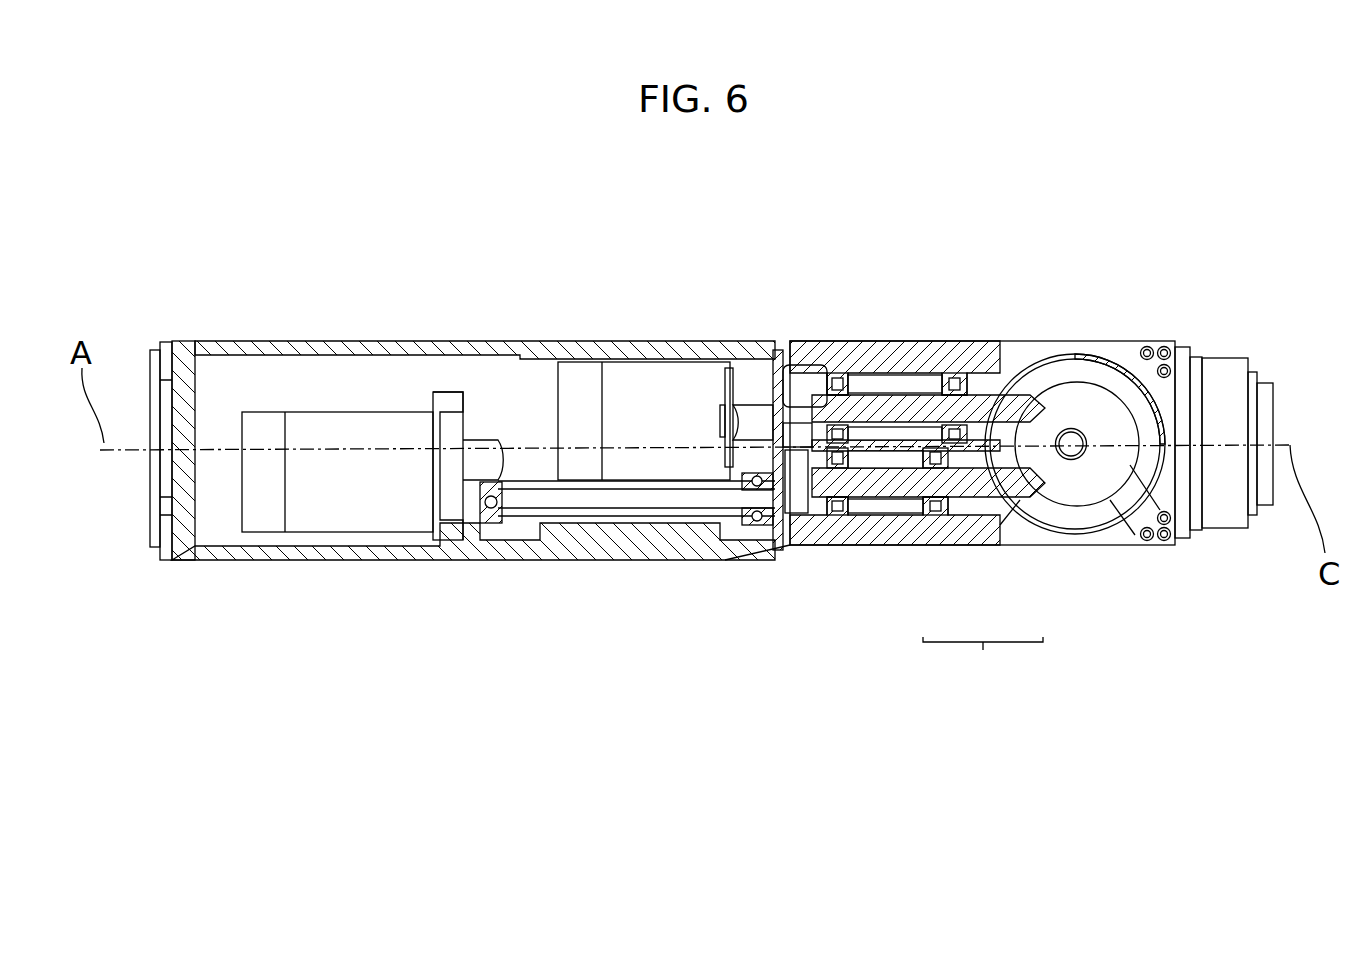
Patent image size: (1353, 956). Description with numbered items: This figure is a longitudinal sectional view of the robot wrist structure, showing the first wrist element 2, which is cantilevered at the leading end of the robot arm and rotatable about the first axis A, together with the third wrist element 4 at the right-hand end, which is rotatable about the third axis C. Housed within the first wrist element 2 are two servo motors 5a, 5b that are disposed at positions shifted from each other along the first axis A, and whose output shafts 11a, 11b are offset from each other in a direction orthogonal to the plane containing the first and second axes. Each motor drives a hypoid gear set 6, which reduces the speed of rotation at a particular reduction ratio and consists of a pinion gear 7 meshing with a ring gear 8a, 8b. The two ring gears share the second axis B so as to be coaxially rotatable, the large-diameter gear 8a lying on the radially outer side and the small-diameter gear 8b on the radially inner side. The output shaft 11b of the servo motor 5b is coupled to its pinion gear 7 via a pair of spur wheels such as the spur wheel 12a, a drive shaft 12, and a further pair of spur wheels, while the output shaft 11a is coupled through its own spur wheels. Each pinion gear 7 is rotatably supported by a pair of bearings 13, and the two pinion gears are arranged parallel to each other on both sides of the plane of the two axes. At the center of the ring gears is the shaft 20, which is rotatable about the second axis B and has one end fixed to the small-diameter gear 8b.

The first wrist element 2 is at (326, 341).
The third wrist element 4 is at (1228, 358).
The servo motor 5a is at (641, 359).
The servo motor 5b is at (385, 515).
The hypoid gear set 6 is at (983, 665).
The pinion gear 7 is at (975, 490).
The ring gear 8a is at (1044, 522).
The ring gear 8b is at (1069, 383).
The output shaft 11a is at (747, 402).
The output shaft 11b is at (468, 483).
The shaft 12 is at (636, 499).
The spur wheel 12a is at (779, 402).
The bearing 13 is at (840, 380).
The shaft 20 is at (1071, 460).